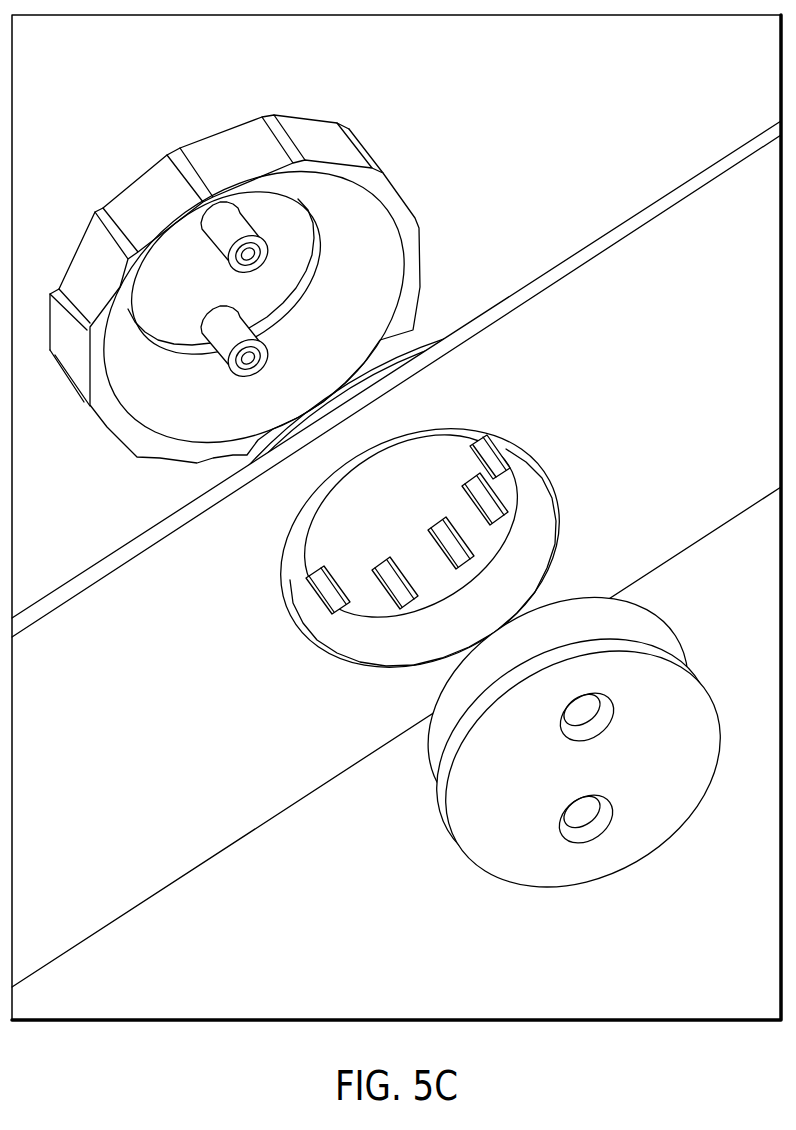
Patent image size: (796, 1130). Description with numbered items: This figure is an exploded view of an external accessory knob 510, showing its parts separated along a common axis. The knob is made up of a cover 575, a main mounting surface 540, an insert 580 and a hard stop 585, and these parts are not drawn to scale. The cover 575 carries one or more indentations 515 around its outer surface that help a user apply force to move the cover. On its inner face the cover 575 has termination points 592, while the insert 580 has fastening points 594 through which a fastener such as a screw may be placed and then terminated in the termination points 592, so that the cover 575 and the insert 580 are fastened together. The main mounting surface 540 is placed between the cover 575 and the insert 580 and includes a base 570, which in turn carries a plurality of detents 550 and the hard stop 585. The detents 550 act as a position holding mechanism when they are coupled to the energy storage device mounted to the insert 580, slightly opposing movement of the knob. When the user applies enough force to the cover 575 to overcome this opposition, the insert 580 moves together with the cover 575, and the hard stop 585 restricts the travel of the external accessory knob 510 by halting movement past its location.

The external accessory knob 510 is at (613, 95).
The indentations 515 is at (107, 218).
The main mounting surface 540 is at (205, 842).
The detents 550 is at (497, 523).
The base 570 is at (376, 366).
The cover 575 is at (347, 255).
The insert 580 is at (655, 790).
The hard stop 585 is at (486, 455).
The termination points 592 is at (232, 276).
The fastening points 594 is at (582, 709).